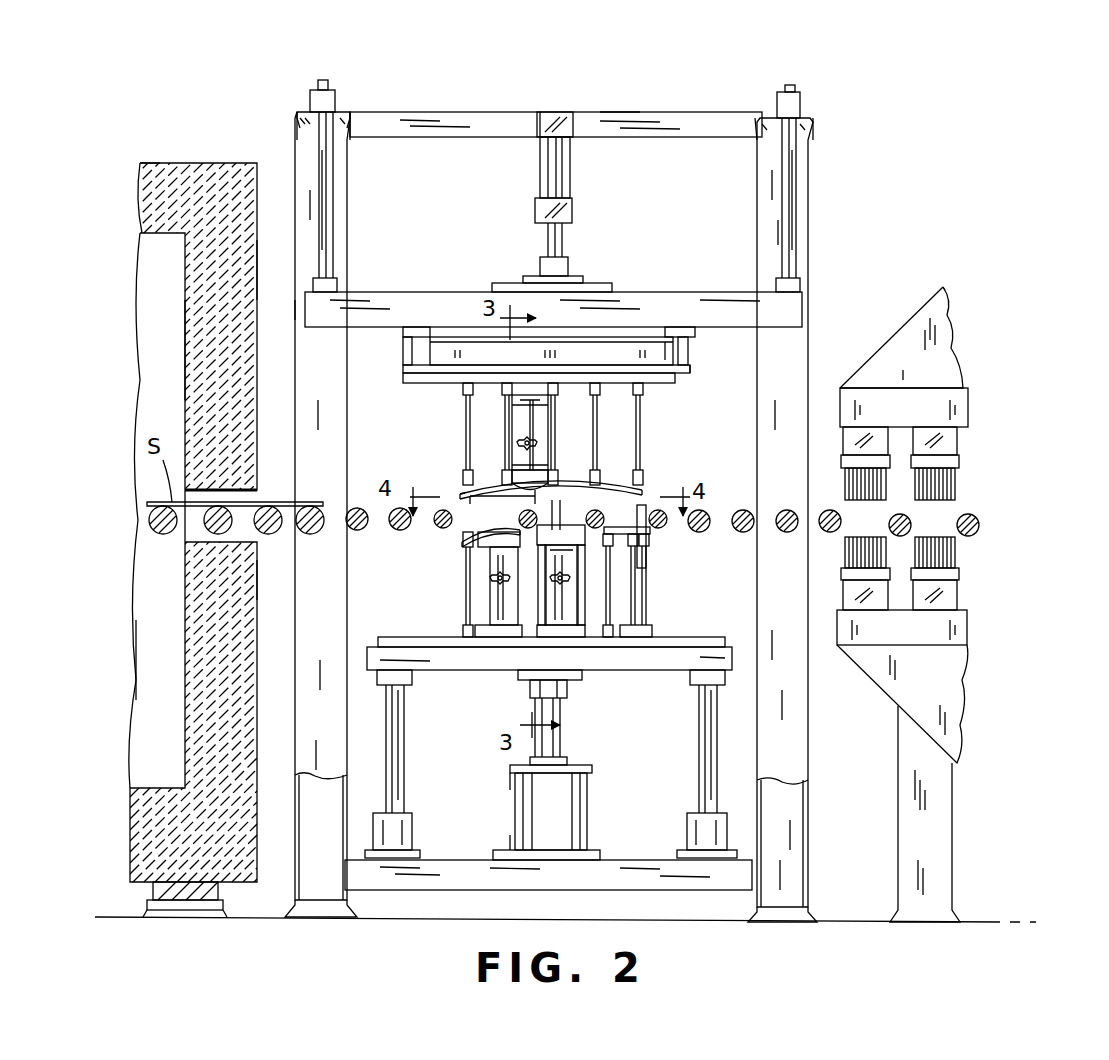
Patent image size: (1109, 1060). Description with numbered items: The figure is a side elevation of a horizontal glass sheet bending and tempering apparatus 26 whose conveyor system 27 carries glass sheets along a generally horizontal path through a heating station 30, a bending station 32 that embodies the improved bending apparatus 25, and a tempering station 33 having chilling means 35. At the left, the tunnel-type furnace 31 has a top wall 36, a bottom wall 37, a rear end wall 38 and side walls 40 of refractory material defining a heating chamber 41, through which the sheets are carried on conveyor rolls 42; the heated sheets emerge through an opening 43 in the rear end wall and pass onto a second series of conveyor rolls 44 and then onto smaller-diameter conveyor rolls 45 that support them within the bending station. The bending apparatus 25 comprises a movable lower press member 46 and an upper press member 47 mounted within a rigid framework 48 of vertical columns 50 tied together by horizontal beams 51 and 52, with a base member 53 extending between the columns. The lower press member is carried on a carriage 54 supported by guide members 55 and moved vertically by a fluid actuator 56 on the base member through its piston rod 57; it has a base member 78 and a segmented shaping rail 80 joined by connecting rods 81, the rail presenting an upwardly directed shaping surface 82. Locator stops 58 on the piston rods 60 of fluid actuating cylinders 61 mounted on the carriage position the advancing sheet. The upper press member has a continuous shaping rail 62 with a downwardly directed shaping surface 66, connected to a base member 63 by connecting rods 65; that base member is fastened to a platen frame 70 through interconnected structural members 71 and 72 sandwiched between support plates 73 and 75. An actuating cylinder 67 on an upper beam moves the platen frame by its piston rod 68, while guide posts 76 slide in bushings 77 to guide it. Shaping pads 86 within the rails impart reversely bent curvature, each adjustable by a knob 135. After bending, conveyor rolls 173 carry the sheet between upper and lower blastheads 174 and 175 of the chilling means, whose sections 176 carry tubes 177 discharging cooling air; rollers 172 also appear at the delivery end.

The bending apparatus 25 is at (718, 425).
The horizontal glass sheet bending and tempering apparatus 26 is at (262, 72).
The conveyor system 27 is at (278, 548).
The heating station 30 is at (157, 130).
The furnace 31 is at (197, 160).
The bending station 32 is at (645, 110).
The tempering station 33 is at (916, 268).
The chilling means 35 is at (872, 342).
The top wall 36 is at (150, 193).
The bottom wall 37 is at (140, 862).
The rear end wall 38 is at (252, 278).
The side walls 40 is at (172, 356).
The heating chamber 41 is at (140, 662).
The conveyor rolls 42 is at (218, 532).
The opening 43 is at (245, 496).
The conveyor rolls 44 is at (357, 532).
The conveyor rolls 45 is at (488, 518).
The lower press member 46 is at (457, 542).
The upper press member 47 is at (448, 482).
The framework 48 is at (430, 110).
The columns 50 is at (298, 802).
The horizontal beams 51 is at (590, 122).
The horizontal beams 52 is at (347, 118).
The base member 53 is at (628, 872).
The carriage 54 is at (657, 670).
The guide members 55 is at (400, 745).
The fluid actuator 56 is at (515, 808).
The piston rod 57 is at (560, 748).
The locator stops 58 is at (645, 505).
The piston rod 60 is at (640, 546).
The fluid actuating cylinder 61 is at (655, 628).
The shaping rail 62 is at (625, 478).
The base member 63 is at (440, 381).
The connecting rods 65 is at (636, 398).
The shaping surface 66 is at (590, 486).
The actuating cylinder 67 is at (540, 178).
The piston rod 68 is at (560, 232).
The platen frame 70 is at (440, 292).
The structural member 71 is at (665, 336).
The structural member 72 is at (405, 348).
The support plate 73 is at (625, 332).
The support plate 75 is at (403, 368).
The guide posts 76 is at (337, 194).
The bushings 77 is at (320, 95).
The base member 78 is at (440, 640).
The shaping rail 80 is at (648, 562).
The connecting rods 81 is at (606, 590).
The shaping surface 82 is at (558, 540).
The shaping pads 86 is at (518, 450).
The knob 135 is at (540, 396).
The delivery rollers 172 is at (968, 513).
The conveyor rolls 173 is at (830, 533).
The upper blasthead 174 is at (937, 366).
The lower blasthead 175 is at (938, 703).
The sections 176 is at (920, 442).
The tubes 177 is at (845, 492).